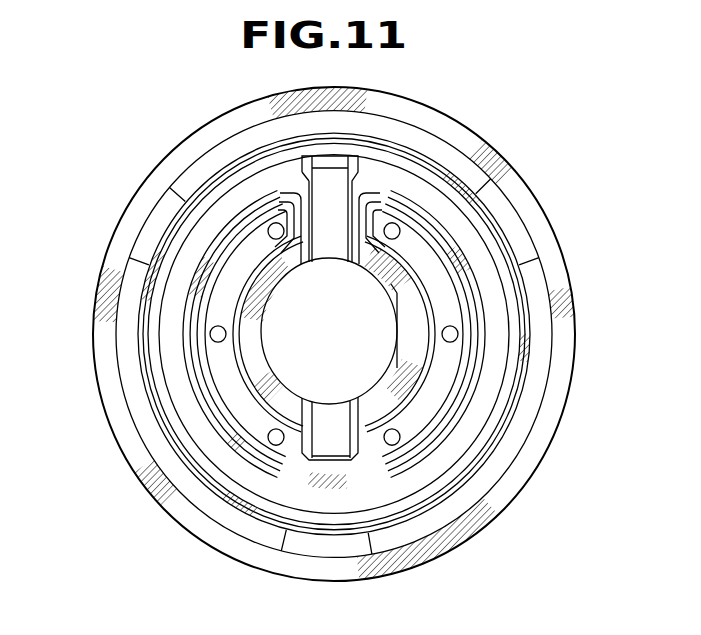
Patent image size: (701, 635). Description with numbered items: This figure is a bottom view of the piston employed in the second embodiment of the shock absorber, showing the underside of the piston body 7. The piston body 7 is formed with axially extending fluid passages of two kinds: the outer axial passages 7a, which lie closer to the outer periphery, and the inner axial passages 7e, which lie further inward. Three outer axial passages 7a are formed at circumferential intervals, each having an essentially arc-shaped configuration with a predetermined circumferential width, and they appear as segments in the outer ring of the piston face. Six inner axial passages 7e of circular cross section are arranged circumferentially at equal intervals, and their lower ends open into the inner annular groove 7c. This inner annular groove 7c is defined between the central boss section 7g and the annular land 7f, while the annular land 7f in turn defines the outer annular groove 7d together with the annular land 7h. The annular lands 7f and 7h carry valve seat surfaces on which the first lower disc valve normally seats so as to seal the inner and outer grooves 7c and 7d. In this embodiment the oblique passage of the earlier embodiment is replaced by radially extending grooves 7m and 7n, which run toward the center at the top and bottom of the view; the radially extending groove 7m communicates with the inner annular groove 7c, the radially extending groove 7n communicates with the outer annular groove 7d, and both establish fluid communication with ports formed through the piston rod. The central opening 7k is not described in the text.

The piston body 7 is at (122, 459).
The outer axial passage 7a is at (155, 232).
The inner annular groove 7c is at (229, 384).
The outer annular groove 7d is at (168, 285).
The inner axial passage 7e is at (266, 228).
The annular land 7f is at (478, 366).
The central boss section 7g is at (407, 333).
The annular land 7h is at (524, 326).
The central bore 7k is at (316, 349).
The radially extending groove 7m is at (332, 440).
The radially extending groove 7n is at (336, 205).